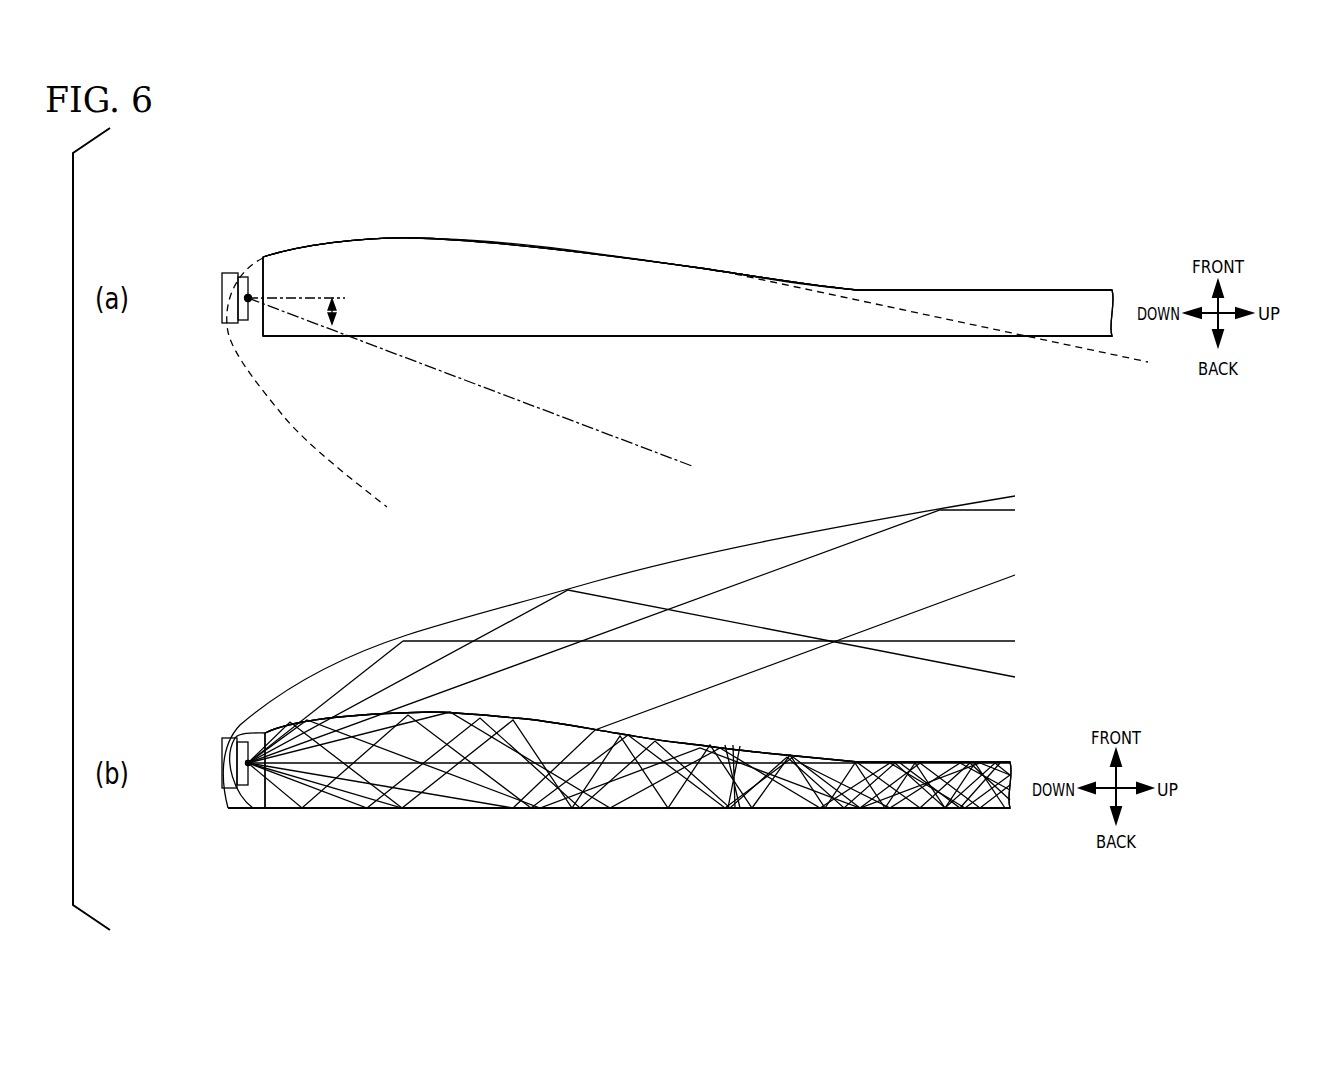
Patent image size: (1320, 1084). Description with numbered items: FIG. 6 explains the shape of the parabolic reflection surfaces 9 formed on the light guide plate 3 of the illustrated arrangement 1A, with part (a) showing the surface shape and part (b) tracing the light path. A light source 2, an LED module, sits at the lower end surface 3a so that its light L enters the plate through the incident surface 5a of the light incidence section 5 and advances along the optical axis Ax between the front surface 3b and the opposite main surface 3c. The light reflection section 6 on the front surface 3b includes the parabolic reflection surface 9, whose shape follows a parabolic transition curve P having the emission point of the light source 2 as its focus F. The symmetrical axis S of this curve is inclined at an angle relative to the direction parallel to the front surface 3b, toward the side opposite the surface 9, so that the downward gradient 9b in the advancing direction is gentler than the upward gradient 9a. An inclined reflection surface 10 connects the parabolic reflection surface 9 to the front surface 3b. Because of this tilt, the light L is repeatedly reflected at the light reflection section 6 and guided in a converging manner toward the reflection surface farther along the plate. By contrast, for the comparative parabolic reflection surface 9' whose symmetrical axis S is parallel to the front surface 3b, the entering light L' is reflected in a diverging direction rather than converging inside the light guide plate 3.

The lighting device 1A is at (1047, 219).
The light source 2 is at (222, 294).
The light guide plate 3 is at (820, 337).
The lower end surface 3a is at (263, 336).
The front surface 3b is at (1074, 290).
The lower surface 3c is at (1076, 336).
The light incidence section 5 is at (248, 530).
The incident surface 5a is at (248, 298).
The light reflection section 6 is at (637, 228).
The parabolic reflection surface 9 is at (560, 444).
The upward gradient 9a is at (345, 240).
The downward gradient 9b is at (565, 250).
The parabolic reflection surface 9' is at (619, 650).
The inclined reflection surface 10 is at (800, 282).
The parabolic transition curve P is at (925, 312).
The focus F is at (248, 298).
The optical axis Ax is at (343, 298).
The symmetrical axis S is at (520, 400).
The light L is at (631, 697).
The light L' is at (656, 683).